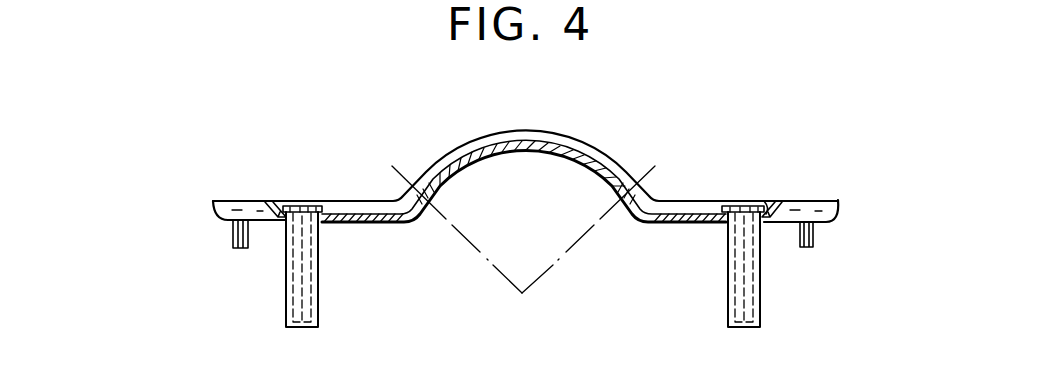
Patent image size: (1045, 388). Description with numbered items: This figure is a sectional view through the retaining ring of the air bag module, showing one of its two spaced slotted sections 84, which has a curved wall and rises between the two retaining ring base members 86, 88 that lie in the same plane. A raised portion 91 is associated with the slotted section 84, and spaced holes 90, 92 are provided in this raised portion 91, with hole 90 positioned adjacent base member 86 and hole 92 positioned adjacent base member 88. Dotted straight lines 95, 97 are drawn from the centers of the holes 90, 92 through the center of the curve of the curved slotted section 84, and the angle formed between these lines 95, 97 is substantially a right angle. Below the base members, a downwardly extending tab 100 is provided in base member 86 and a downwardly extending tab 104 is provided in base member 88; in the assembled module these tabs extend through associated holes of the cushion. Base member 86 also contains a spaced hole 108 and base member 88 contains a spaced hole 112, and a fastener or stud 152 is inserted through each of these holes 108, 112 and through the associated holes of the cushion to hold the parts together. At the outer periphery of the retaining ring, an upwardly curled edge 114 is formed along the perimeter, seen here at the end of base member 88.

The slotted section 84 is at (584, 142).
The base member 86 is at (366, 224).
The base member 88 is at (676, 224).
The hole 90 is at (414, 175).
The raised portion 91 is at (477, 152).
The hole 92 is at (640, 175).
The dotted straight line 95 is at (463, 240).
The dotted straight line 97 is at (573, 247).
The downwardly extending tab 100 is at (232, 239).
The downwardly extending tab 104 is at (813, 237).
The hole 108 is at (279, 225).
The hole 112 is at (738, 218).
The upwardly curled edge 114 is at (773, 200).
The fastener or stud 152 is at (300, 309).